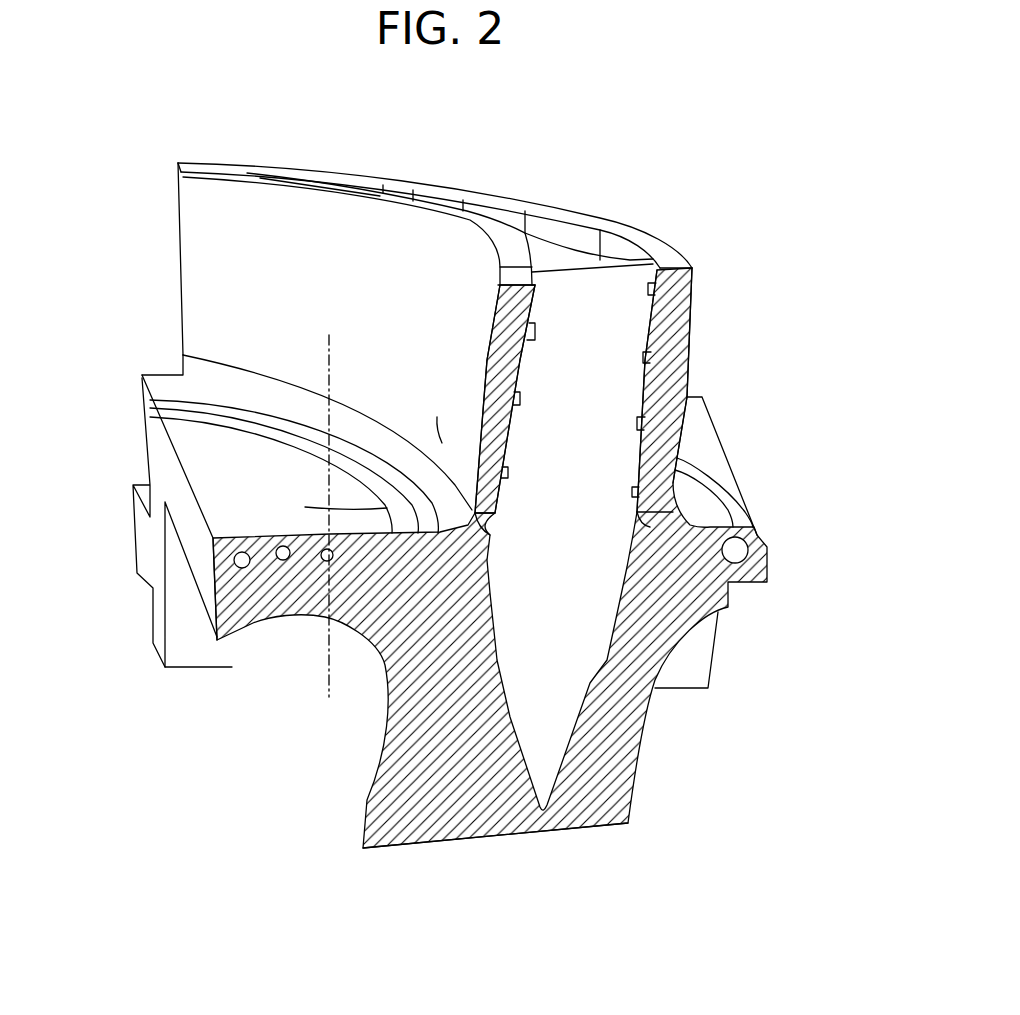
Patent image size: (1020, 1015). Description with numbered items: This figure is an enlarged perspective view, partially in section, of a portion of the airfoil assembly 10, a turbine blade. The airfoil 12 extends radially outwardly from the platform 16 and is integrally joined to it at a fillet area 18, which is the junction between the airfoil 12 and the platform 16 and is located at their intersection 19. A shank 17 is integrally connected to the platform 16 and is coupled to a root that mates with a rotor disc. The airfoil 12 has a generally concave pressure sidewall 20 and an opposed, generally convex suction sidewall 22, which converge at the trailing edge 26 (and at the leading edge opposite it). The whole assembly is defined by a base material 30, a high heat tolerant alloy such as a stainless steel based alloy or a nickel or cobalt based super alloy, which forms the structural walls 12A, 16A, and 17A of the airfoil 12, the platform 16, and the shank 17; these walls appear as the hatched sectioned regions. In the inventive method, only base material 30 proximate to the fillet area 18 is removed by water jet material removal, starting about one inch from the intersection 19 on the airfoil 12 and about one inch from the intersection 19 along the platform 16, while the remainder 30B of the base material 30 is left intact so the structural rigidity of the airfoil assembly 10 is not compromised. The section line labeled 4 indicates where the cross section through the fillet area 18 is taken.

The airfoil assembly 10 is at (641, 156).
The airfoil 12 is at (174, 190).
The airfoil structural wall 12A is at (667, 323).
The platform 16 is at (146, 411).
The platform structural wall 16A is at (711, 590).
The shank 17 is at (638, 780).
The shank structural wall 17A is at (397, 813).
The fillet area 18 is at (198, 390).
The intersection 19 is at (647, 520).
The pressure sidewall 20 is at (306, 218).
The suction sidewall 22 is at (683, 310).
The trailing edge 26 is at (178, 236).
The base material 30 is at (373, 233).
The remainder of the base material 30B is at (240, 216).
The section line 4- 4 is at (329, 335).